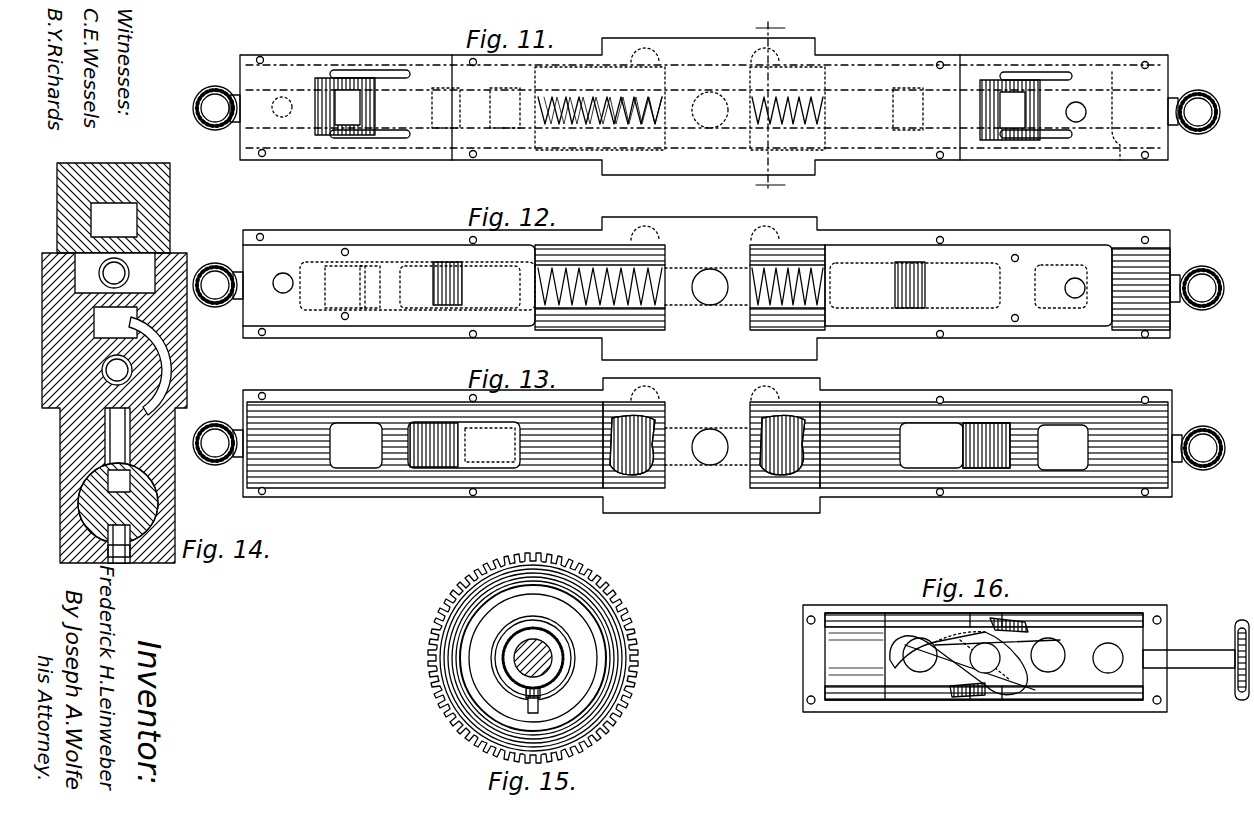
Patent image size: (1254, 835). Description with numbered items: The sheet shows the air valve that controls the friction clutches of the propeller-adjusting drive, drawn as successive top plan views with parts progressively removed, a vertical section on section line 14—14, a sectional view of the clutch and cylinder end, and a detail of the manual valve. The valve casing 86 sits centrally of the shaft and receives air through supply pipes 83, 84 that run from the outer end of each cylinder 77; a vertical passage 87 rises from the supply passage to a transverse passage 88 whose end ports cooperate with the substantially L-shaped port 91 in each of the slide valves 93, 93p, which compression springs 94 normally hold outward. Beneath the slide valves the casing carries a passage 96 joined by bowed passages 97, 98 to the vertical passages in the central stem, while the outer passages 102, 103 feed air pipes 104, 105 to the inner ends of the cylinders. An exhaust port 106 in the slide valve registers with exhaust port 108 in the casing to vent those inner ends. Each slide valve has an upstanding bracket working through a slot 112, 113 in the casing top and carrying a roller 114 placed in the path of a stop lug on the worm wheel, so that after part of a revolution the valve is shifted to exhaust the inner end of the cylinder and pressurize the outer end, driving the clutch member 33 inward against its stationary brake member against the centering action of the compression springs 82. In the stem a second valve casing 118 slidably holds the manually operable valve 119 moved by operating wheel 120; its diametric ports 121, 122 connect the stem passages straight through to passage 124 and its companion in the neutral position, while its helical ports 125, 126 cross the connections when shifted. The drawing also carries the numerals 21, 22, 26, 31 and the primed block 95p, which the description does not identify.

In FIG. 11, the section line 14 is at (763, 110).
In FIG. 12, the roller 21 is at (462, 287).
In FIG. 12, the roller 22 is at (895, 288).
In FIG. 13, the block 26 is at (955, 445).
In FIG. 15, the gear wheel teeth 31 is at (612, 600).
In FIG. 15, the friction clutch member 33 is at (622, 618).
In FIG. 15, the cylinder 77 is at (568, 640).
In FIG. 15, the compression springs 82 is at (556, 668).
In FIG. 14, the air supply pipe 83 is at (165, 389).
In FIG. 15, the air supply pipe 84 is at (539, 706).
In FIG. 11, the valve casing 86 is at (440, 160).
In FIG. 12, the valve casing 86 is at (390, 242).
In FIG. 13, the valve casing 86 is at (396, 400).
In FIG. 14, the valve casing 86 is at (170, 212).
In FIG. 11, the vertical passage 87 is at (710, 110).
In FIG. 12, the vertical passage 87 is at (710, 305).
In FIG. 13, the vertical passage 87 is at (710, 465).
In FIG. 14, the transverse passage 88 is at (127, 213).
In FIG. 15, the L-shaped port 91 is at (560, 652).
In FIG. 11, the slide valve 93 is at (545, 130).
In FIG. 12, the slide valve 93 is at (389, 285).
In FIG. 11, the slide valve 93p is at (1122, 150).
In FIG. 12, the slide valve 93p is at (865, 280).
In FIG. 11, the compression springs 94 is at (592, 130).
In FIG. 12, the compression springs 94 is at (578, 302).
In FIG. 14, the compression springs 94 is at (135, 275).
In FIG. 13, the roller block (prime) 95p is at (464, 445).
In FIG. 14, the passage 96 is at (115, 322).
In FIG. 13, the bowed passage 97 is at (645, 445).
In FIG. 13, the bowed passage 98 is at (792, 440).
In FIG. 14, the bowed passage 98 is at (150, 365).
In FIG. 11, the passage 102 is at (1078, 122).
In FIG. 13, the passage 102 is at (356, 445).
In FIG. 12, the passage 103 is at (1065, 290).
In FIG. 13, the passage 103 is at (1063, 447).
In FIG. 11, the air pipe 104 is at (215, 130).
In FIG. 12, the air pipe 104 is at (215, 307).
In FIG. 13, the air pipe 104 is at (215, 465).
In FIG. 11, the air pipe 105 is at (1198, 134).
In FIG. 12, the air pipe 105 is at (1202, 310).
In FIG. 13, the air pipe 105 is at (1203, 470).
In FIG. 12, the exhaust port 106 is at (286, 292).
In FIG. 11, the exhaust port 108 is at (296, 152).
In FIG. 11, the slot 112 is at (402, 132).
In FIG. 11, the slot 113 is at (1050, 135).
In FIG. 11, the roller 114 is at (340, 130).
In FIG. 16, the valve casing 118 is at (850, 612).
In FIG. 16, the manually operable valve 119 is at (1095, 635).
In FIG. 16, the operating wheel 120 is at (1205, 650).
In FIG. 16, the diametric port 121 is at (985, 658).
In FIG. 16, the diametric port 122 is at (1108, 658).
In FIG. 14, the passage 124 is at (128, 562).
In FIG. 14, the helical port 125 is at (142, 548).
In FIG. 16, the helical port 125 is at (948, 693).
In FIG. 14, the helical port 126 is at (158, 497).
In FIG. 16, the helical port 126 is at (1035, 622).